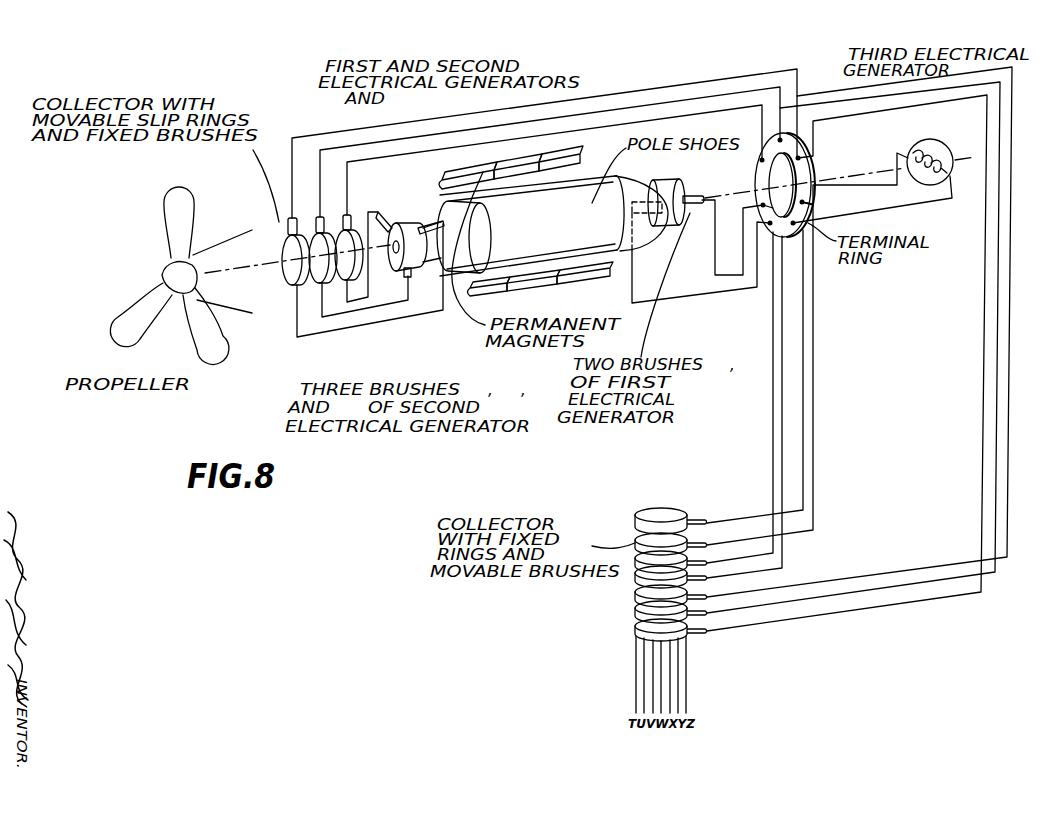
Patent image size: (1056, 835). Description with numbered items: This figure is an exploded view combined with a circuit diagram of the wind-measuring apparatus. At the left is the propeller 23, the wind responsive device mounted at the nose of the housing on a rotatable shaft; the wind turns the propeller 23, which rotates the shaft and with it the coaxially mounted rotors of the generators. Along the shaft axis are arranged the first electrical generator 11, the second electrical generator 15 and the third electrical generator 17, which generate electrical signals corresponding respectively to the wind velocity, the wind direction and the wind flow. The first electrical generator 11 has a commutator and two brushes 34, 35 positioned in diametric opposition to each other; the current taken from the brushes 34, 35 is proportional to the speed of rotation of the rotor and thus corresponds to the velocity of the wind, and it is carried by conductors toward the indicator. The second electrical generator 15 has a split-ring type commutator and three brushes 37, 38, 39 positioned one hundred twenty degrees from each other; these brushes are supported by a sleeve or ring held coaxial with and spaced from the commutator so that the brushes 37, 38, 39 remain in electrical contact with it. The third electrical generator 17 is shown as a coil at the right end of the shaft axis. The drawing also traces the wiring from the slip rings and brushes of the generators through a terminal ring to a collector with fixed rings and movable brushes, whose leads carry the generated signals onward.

The propeller 23 is at (212, 356).
The first electrical generator 11 is at (539, 232).
The second electrical generator 15 is at (405, 271).
The third electrical generator 17 is at (911, 153).
The brush 34 is at (706, 285).
The brush 35 is at (696, 288).
The brush 37 is at (411, 272).
The brush 38 is at (448, 305).
The brush 39 is at (390, 319).